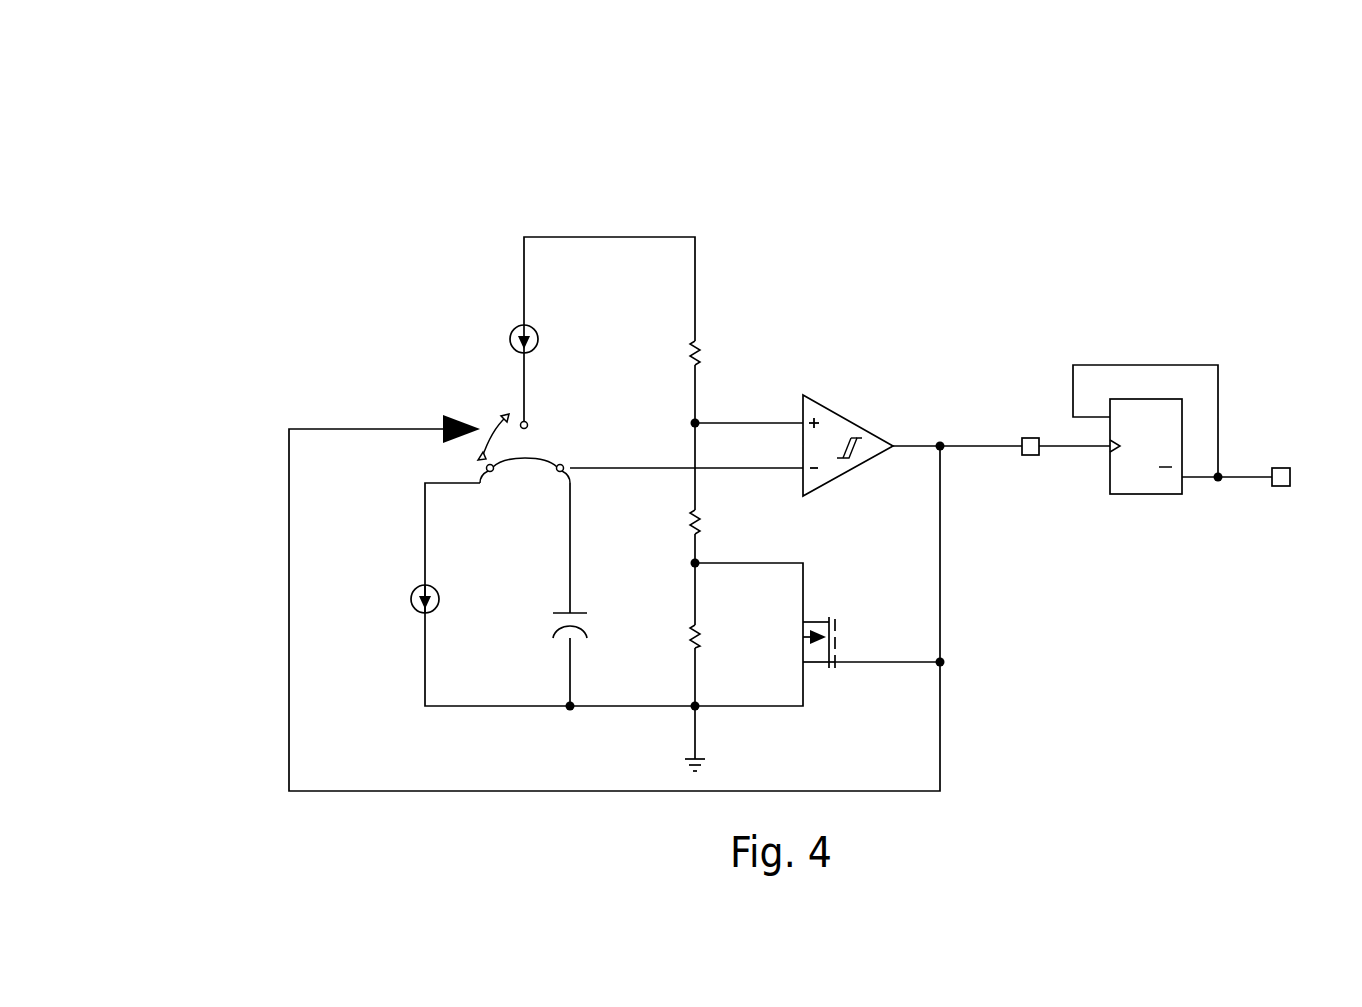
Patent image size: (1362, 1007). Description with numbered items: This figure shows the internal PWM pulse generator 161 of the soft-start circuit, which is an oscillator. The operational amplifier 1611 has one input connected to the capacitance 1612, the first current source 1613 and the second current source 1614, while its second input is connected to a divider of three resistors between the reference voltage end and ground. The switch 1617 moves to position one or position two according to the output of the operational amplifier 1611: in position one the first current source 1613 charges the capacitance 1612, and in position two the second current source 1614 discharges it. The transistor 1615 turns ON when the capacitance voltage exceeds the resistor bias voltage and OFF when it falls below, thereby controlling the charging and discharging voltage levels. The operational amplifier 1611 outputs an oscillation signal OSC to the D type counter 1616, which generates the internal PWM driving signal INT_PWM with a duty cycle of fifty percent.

The internal PWM pulse generator 161 is at (1208, 118).
The operational amplifier 1611 is at (821, 414).
The capacitance 1612 is at (552, 619).
The first current source 1613 is at (511, 331).
The second current source 1614 is at (411, 596).
The transistor 1615 is at (836, 637).
The D type counter 1616 is at (1143, 494).
The switch 1617 is at (483, 413).